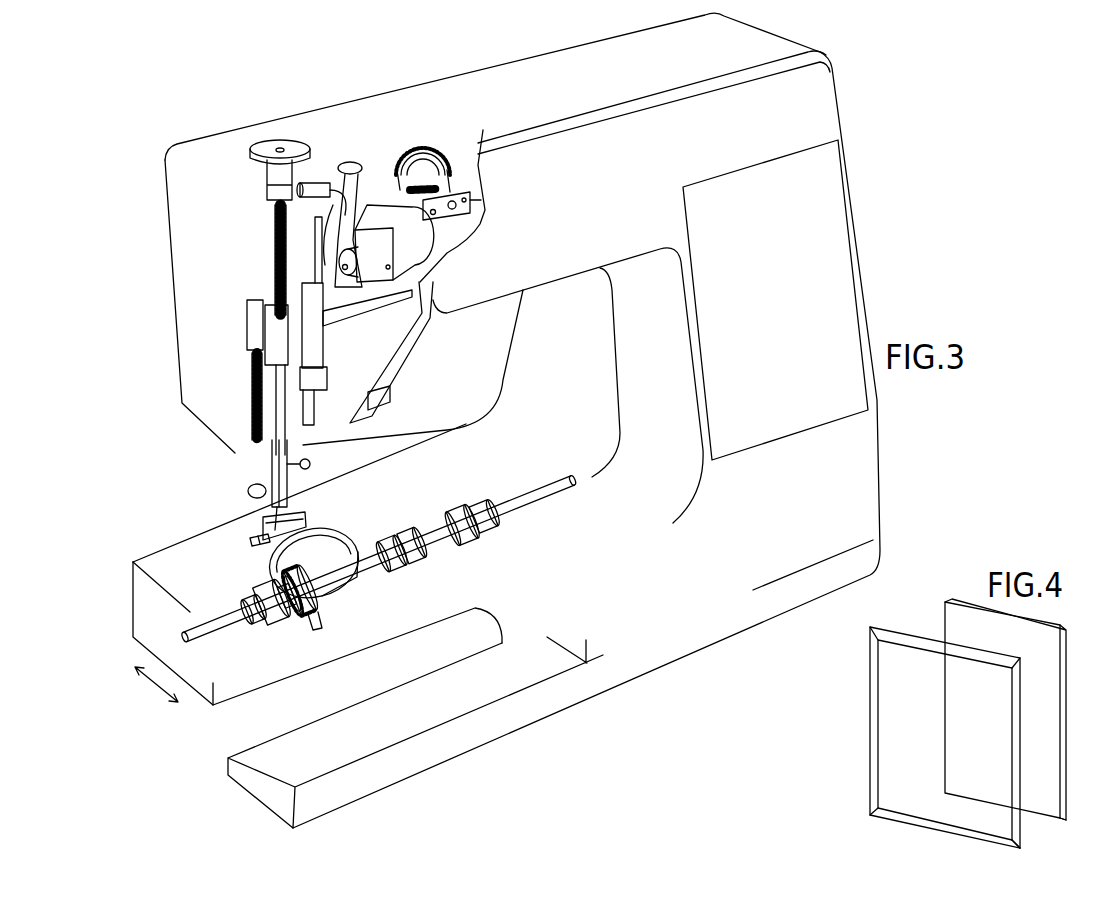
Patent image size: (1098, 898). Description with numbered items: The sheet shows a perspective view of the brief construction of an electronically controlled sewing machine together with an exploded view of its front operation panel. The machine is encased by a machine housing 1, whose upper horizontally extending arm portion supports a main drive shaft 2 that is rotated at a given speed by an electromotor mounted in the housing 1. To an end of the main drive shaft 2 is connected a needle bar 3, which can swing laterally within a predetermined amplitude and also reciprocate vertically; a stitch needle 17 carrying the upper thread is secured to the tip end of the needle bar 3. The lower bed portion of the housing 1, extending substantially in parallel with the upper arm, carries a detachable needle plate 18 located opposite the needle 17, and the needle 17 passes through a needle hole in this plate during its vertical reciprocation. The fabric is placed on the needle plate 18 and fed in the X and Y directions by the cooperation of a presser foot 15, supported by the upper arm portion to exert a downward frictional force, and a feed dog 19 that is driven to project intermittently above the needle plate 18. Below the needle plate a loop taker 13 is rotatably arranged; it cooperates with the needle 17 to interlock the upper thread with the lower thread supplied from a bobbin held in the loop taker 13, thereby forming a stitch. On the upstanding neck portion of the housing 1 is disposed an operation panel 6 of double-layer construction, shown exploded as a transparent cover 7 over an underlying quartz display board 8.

In FIG. 3, the machine housing 1 is at (822, 86).
In FIG. 3, the main drive shaft 2 is at (483, 140).
In FIG. 3, the needle bar 3 is at (295, 433).
In FIG. 3, the operation panel 6 is at (850, 318).
In FIG. 4, the operation panel 6 is at (1012, 850).
In FIG. 4, the transparent cover 7 is at (887, 750).
In FIG. 4, the quartz display board 8 is at (1057, 751).
In FIG. 3, the loop taker 13 is at (313, 487).
In FIG. 3, the presser foot 15 is at (297, 513).
In FIG. 3, the stitch needle 17 is at (287, 497).
In FIG. 3, the needle plate 18 is at (262, 572).
In FIG. 3, the feed dog 19 is at (262, 541).